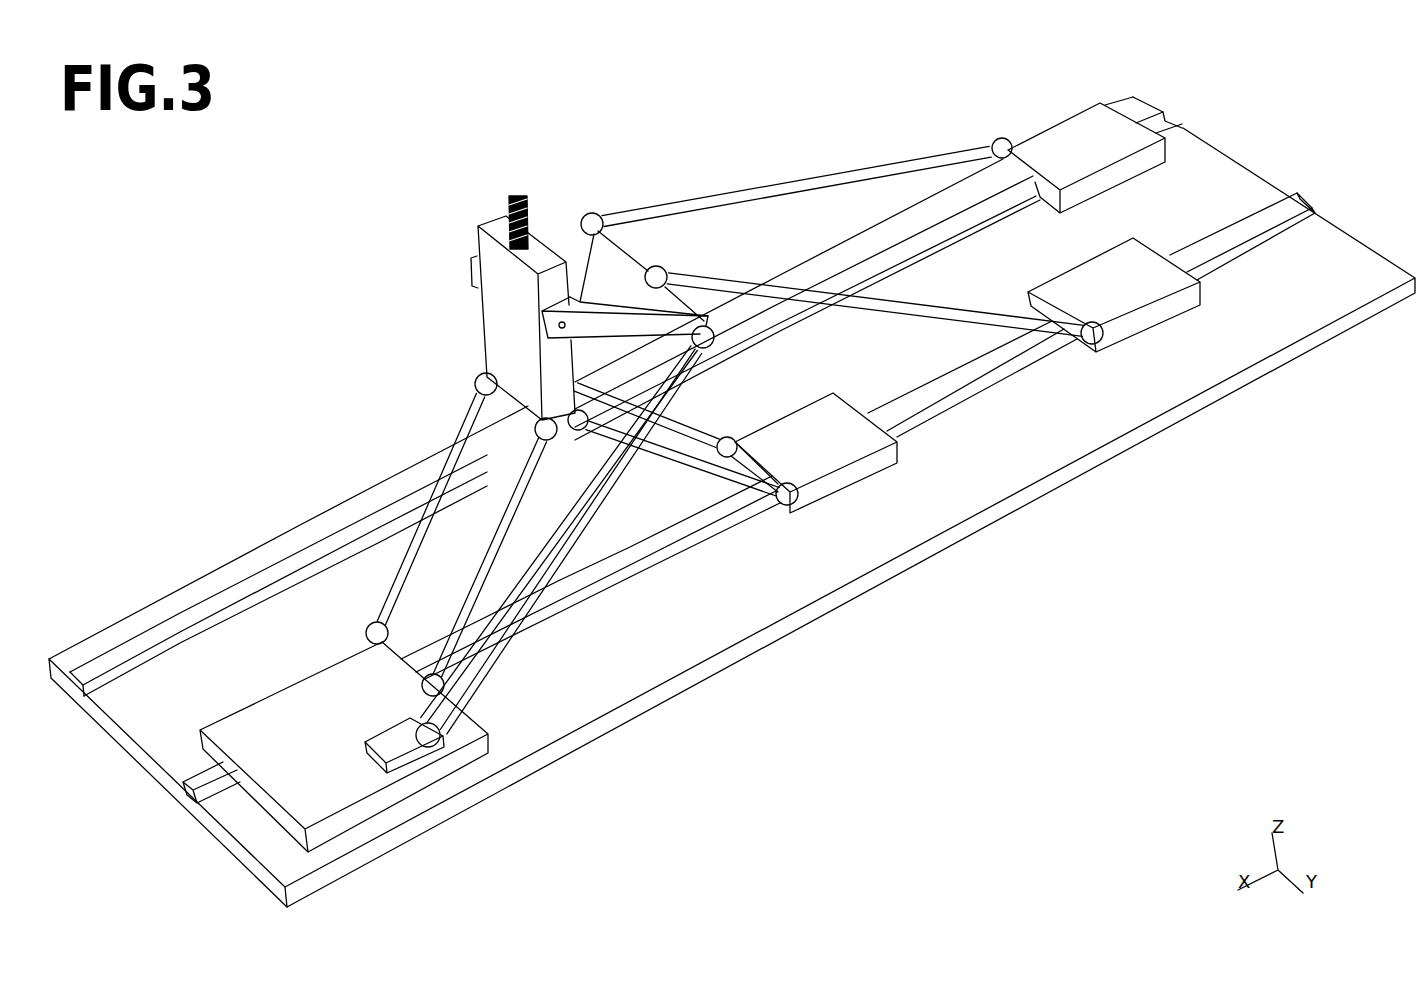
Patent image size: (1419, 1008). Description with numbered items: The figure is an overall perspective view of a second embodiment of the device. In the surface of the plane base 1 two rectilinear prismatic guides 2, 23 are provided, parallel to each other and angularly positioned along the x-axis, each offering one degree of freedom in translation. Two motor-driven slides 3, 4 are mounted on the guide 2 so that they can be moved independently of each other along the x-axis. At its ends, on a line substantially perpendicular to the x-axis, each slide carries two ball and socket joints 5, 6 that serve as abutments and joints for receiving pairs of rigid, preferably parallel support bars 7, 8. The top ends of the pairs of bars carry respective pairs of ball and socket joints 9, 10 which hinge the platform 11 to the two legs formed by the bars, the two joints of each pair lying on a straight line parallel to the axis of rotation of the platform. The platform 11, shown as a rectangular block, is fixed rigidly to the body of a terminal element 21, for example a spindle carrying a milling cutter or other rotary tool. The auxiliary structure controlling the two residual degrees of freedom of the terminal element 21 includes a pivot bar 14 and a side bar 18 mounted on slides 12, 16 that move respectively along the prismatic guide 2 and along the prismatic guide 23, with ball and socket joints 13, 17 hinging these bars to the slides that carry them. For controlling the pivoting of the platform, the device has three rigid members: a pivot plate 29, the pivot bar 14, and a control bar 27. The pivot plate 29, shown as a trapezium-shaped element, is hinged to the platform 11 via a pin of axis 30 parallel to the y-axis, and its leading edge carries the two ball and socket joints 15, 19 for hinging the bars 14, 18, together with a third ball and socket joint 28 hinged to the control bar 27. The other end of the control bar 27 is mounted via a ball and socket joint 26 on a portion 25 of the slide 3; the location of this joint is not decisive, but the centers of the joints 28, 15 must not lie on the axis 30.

The plane base 1 is at (1316, 305).
The prismatic guide 2 is at (1302, 206).
The slide 3 is at (378, 802).
The slide 4 is at (846, 480).
The ball and socket joints 5 is at (366, 632).
The ball and socket joints 6 is at (737, 439).
The support bars 7 is at (455, 430).
The support bars 8 is at (677, 426).
The ball and socket joints 9 is at (476, 380).
The ball and socket joints 10 is at (580, 434).
The platform 11 is at (483, 320).
The slide 12 is at (1156, 320).
The ball and socket joint 13 is at (1090, 346).
The pivot bar 14 is at (913, 312).
The ball and socket joint 15 is at (669, 269).
The slide 16 is at (1088, 116).
The ball and socket joint 17 is at (1004, 138).
The side bar 18 is at (834, 180).
The ball and socket joint 19 is at (601, 214).
The terminal element 21 is at (508, 197).
The prismatic guide 23 is at (1167, 116).
The portion of the slide 25 is at (362, 750).
The ball and socket joint 26 is at (440, 737).
The control bar 27 is at (484, 664).
The ball and socket joint 28 is at (713, 342).
The pivot plate 29 is at (616, 251).
The axis 30 is at (566, 324).